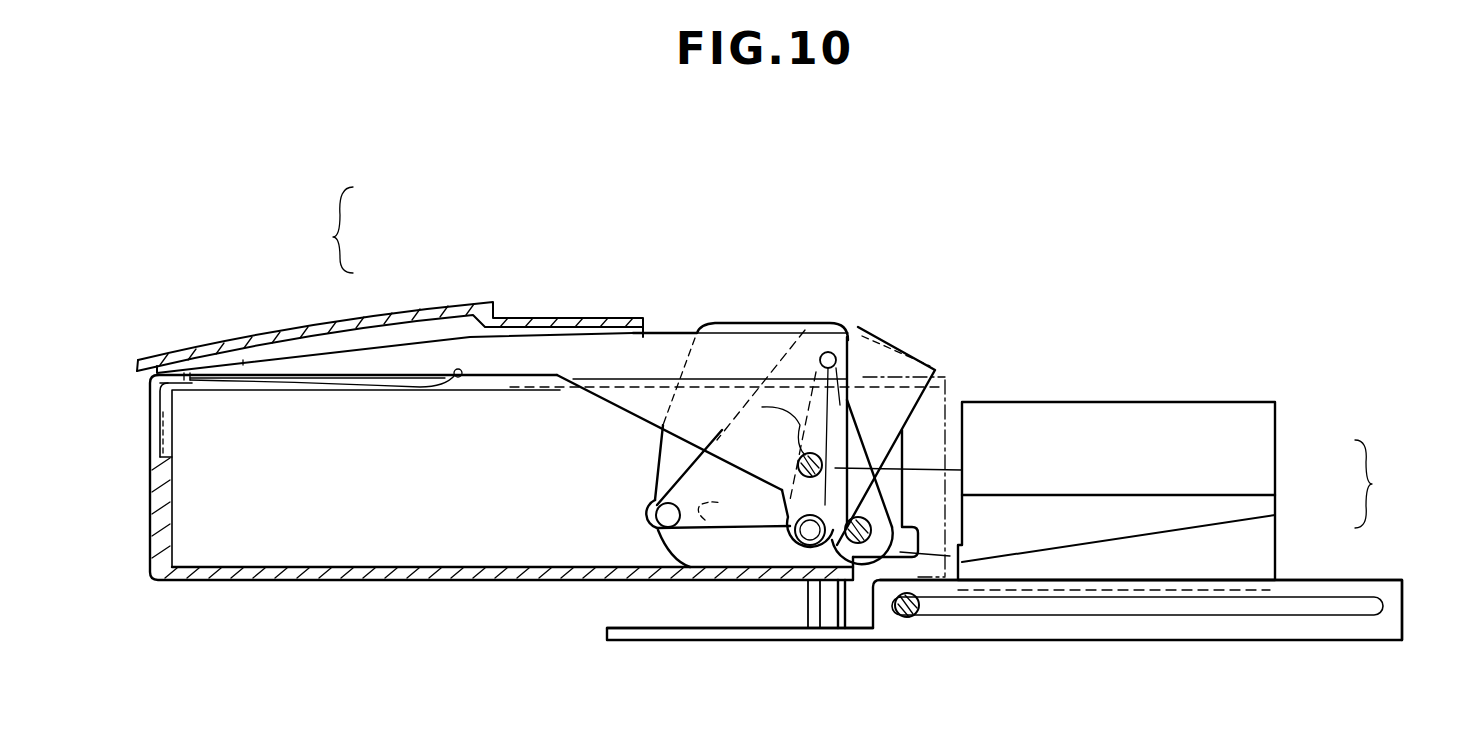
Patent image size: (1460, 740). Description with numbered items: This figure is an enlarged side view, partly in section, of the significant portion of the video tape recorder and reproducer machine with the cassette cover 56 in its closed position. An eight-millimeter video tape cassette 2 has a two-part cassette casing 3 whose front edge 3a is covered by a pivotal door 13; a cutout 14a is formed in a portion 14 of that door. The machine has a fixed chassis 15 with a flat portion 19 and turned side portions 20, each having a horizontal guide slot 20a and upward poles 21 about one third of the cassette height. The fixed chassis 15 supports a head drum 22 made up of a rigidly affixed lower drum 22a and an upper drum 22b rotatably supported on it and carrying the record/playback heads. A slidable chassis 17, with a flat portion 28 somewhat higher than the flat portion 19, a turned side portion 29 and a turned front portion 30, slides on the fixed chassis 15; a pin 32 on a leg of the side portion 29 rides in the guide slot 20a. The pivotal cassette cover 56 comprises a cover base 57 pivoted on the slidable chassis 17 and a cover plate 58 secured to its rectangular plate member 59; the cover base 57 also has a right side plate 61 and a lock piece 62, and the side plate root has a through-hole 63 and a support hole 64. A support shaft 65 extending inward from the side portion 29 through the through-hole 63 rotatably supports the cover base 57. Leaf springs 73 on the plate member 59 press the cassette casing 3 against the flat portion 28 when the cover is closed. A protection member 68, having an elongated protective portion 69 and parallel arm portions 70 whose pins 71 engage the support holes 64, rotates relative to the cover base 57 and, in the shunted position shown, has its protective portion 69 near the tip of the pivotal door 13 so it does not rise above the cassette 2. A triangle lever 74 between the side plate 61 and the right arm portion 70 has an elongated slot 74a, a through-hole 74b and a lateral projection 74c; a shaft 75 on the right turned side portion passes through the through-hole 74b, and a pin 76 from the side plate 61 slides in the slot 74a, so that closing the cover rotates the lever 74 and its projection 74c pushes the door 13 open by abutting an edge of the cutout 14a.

The video tape cassette 2 is at (512, 386).
The cassette casing 3 is at (528, 400).
The front edge 3a is at (962, 470).
The pivotal door 13 is at (745, 323).
The lever 14 is at (660, 452).
The cutout 14a is at (697, 545).
The fixed chassis 15 is at (1317, 640).
The slidable chassis 17 is at (370, 580).
The flat portion 19 is at (620, 630).
The turned side portion 20 is at (1392, 607).
The guide slot 20a is at (1335, 603).
The pole 21 is at (807, 612).
The head drum 22 is at (1188, 491).
The lower drum 22a is at (1262, 508).
The upper drum 22b is at (1265, 457).
The flat portion 28 is at (320, 565).
The turned side portion 29 is at (963, 552).
The turned front portion 30 is at (172, 497).
The pin 32 is at (905, 618).
The pivotal cassette cover 56 is at (320, 230).
The cover base 57 is at (402, 343).
The cover plate 58 is at (424, 302).
The rectangular plate member 59 is at (245, 362).
The right side plate 61 is at (615, 401).
The lock piece 62 is at (172, 455).
The through-hole 63 is at (902, 462).
The support hole 64 is at (797, 550).
The support shaft 65 is at (798, 463).
The protection member 68 is at (895, 348).
The protective portion 69 is at (932, 365).
The arm portion 70 is at (913, 365).
The pin 71 is at (820, 607).
The leaf spring 73 is at (408, 390).
The triangle lever 74 is at (653, 482).
The elongated slot 74a is at (762, 407).
The through-hole 74b is at (950, 555).
The lateral projection 74c is at (656, 516).
The shaft 75 is at (867, 523).
The pin 76 is at (826, 352).